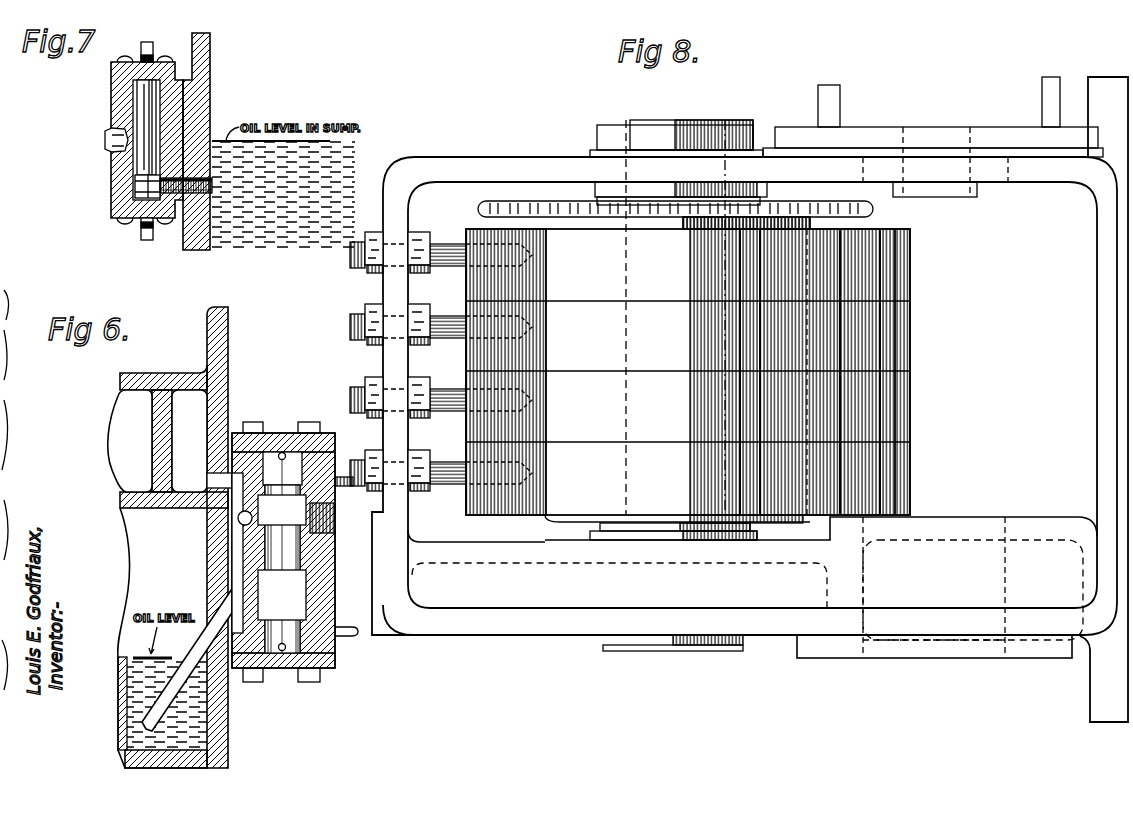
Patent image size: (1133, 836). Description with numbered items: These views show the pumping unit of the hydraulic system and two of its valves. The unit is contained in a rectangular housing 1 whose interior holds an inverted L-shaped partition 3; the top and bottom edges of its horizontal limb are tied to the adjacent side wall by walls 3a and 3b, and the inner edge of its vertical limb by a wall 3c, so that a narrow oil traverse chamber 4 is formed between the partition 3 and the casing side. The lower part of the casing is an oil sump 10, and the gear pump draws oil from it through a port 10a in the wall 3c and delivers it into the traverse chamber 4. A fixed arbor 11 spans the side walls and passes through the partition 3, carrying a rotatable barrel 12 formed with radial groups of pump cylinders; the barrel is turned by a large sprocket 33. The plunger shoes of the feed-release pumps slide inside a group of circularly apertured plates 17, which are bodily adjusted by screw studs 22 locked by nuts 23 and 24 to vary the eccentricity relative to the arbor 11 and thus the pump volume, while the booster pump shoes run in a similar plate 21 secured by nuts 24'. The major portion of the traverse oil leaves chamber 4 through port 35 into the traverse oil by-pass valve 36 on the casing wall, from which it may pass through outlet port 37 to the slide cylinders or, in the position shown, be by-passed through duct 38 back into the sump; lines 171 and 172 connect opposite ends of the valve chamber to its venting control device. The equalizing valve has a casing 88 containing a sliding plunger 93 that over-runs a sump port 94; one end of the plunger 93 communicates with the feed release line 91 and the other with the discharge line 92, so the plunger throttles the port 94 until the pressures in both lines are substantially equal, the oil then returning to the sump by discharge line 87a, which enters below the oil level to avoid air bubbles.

In FIG. 6, the housing 1 is at (223, 355).
In FIG. 6, the partition 3 is at (152, 440).
In FIG. 8, the partition 3 is at (1030, 527).
In FIG. 6, the wall 3a is at (172, 373).
In FIG. 6, the wall 3b is at (186, 508).
In FIG. 6, the wall 3c is at (145, 617).
In FIG. 6, the oil traverse chamber 4 is at (189, 441).
In FIG. 8, the oil sump 10 is at (750, 399).
In FIG. 6, the port 10a is at (212, 718).
In FIG. 8, the arbor 11 is at (626, 344).
In FIG. 8, the barrel 12 is at (807, 263).
In FIG. 8, the circularly apertured plates 17 is at (898, 262).
In FIG. 8, the plate 21 is at (895, 472).
In FIG. 8, the screw studs 22 is at (350, 258).
In FIG. 8, the nuts 23 is at (374, 232).
In FIG. 8, the nuts 24 is at (430, 310).
In FIG. 8, the nuts 24' is at (431, 460).
In FIG. 8, the sprocket 33 is at (485, 208).
In FIG. 6, the port 35 is at (214, 483).
In FIG. 6, the traverse oil by-pass valve 36 is at (318, 556).
In FIG. 6, the outlet port 37 is at (335, 530).
In FIG. 6, the duct 38 is at (171, 664).
In FIG. 6, the line 171 is at (340, 640).
In FIG. 6, the line 172 is at (344, 487).
In FIG. 7, the discharge line 87a is at (188, 196).
In FIG. 7, the equalizing valve 88 is at (111, 106).
In FIG. 7, the feed release line 91 is at (149, 42).
In FIG. 7, the feed discharge line 92 is at (141, 234).
In FIG. 7, the sliding plunger 93 is at (137, 164).
In FIG. 7, the sump port 94 is at (135, 187).